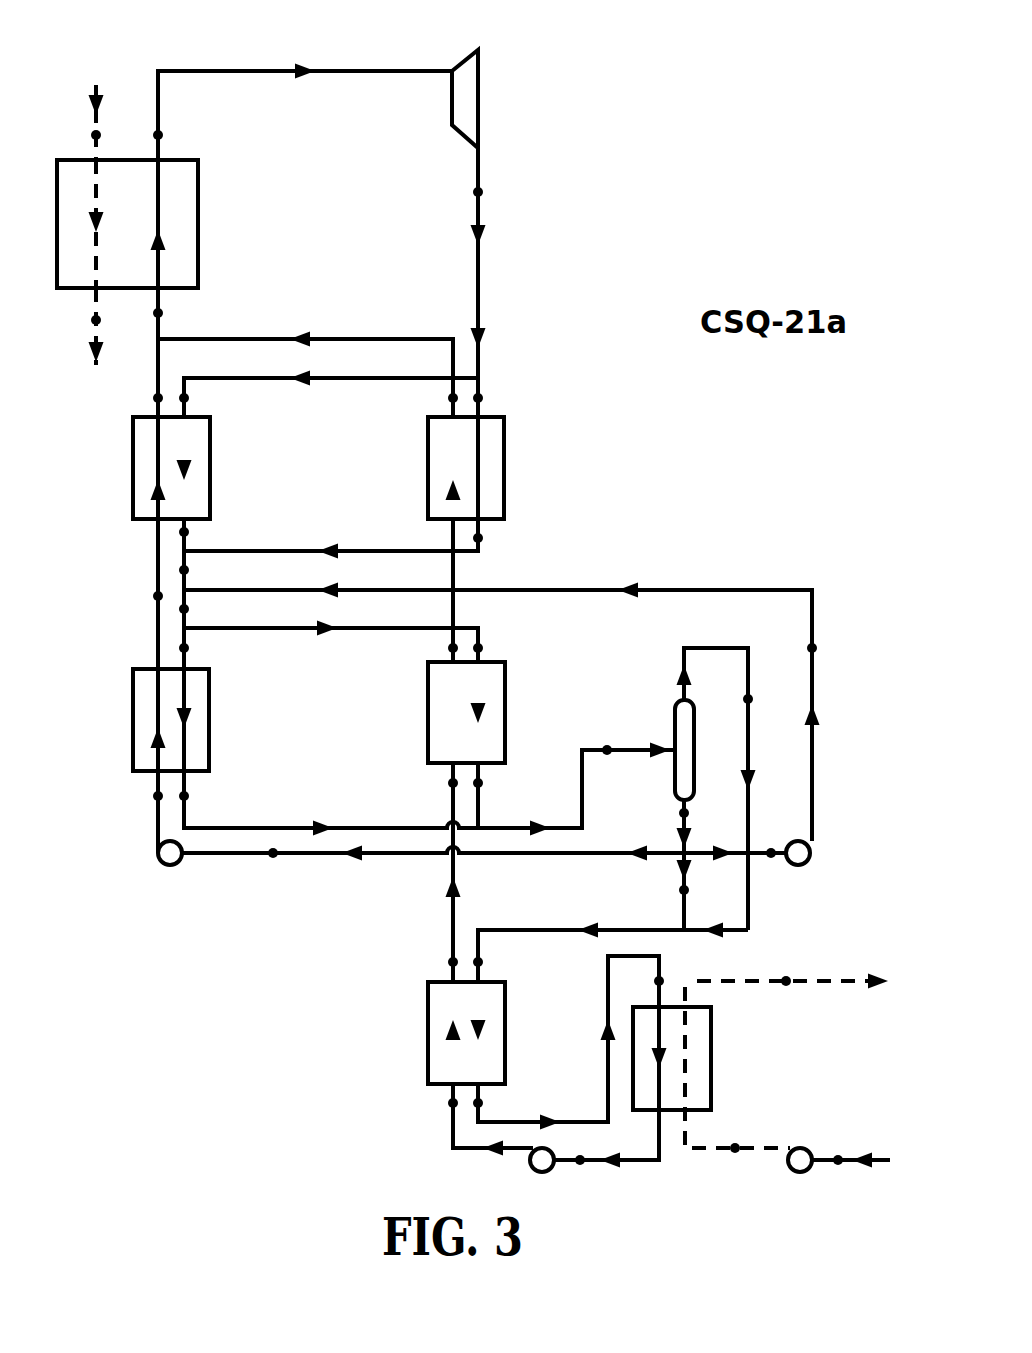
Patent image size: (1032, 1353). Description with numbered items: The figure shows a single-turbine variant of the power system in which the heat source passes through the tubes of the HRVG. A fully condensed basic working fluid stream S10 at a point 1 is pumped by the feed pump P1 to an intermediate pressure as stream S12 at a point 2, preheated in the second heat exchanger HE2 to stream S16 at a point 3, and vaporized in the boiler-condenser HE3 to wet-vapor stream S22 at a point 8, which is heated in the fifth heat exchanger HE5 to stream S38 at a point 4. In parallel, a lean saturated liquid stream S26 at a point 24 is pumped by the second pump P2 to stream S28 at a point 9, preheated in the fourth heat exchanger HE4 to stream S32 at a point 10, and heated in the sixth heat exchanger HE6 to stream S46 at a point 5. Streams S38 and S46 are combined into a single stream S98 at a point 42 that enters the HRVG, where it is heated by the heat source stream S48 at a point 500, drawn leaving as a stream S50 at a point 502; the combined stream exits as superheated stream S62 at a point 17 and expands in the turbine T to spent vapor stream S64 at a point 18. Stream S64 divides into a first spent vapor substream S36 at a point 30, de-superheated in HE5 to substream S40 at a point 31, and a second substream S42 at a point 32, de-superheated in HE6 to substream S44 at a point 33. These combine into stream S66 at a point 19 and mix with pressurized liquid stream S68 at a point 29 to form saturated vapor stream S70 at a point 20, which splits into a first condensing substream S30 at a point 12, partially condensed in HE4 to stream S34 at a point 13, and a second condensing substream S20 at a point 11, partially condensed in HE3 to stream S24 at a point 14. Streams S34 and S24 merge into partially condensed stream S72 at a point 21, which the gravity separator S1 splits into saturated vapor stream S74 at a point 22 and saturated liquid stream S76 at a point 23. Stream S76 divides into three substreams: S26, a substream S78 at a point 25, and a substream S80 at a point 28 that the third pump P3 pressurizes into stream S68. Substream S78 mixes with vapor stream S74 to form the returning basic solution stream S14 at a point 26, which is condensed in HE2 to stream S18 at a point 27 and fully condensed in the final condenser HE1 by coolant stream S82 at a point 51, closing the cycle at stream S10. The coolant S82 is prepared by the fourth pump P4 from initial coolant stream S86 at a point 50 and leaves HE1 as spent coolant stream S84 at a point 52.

The element HRVG is at (167, 224).
The turbine T is at (482, 99).
The first heat exchanger or final condenser HE1 is at (703, 1058).
The second heat exchanger or preheater HE2 is at (498, 1033).
The third heat exchanger or boiler-condenser HE3 is at (437, 712).
The fourth heat exchanger HE4 is at (200, 720).
The fifth heat exchanger HE5 is at (438, 468).
The sixth heat exchanger HE6 is at (199, 468).
The flash tank or gravity separator S1 is at (704, 750).
The first or feed pump P1 is at (542, 1178).
The second pump P2 is at (148, 856).
The third pump P3 is at (818, 856).
The fourth pump P4 is at (800, 1178).
The fully condensed basic working fluid stream S10 is at (645, 1165).
The intermediate pressure basic working fluid stream S12 is at (450, 1121).
The returning basic working fluid stream S14 is at (557, 927).
The heated basic working fluid stream S16 is at (440, 943).
The cooled returning basic working fluid stream S18 is at (582, 1118).
The second condensing lean combined working fluid substream S20 is at (428, 624).
The heated, vaporized basic working fluid stream S22 is at (455, 570).
The cooled second condensing combined working fluid substream S24 is at (482, 803).
The lean saturated liquid stream S26 is at (237, 860).
The high pressure lean liquid stream S28 is at (155, 814).
The first condensing lean combined working fluid substream S30 is at (187, 662).
The preheated high pressure lean liquid stream S32 is at (145, 643).
The cooled first condensing combined working fluid substream S34 is at (248, 825).
The first spent vapor substream S36 is at (482, 408).
The vaporized basic working fluid stream S38 is at (403, 338).
The first de-superheated vapor substream S40 is at (402, 548).
The second spent vapor substream S42 is at (403, 377).
The second de-superheated vapor substream S44 is at (175, 548).
The heated high pressure lean liquid stream S46 is at (147, 371).
The heat source stream S48 is at (93, 90).
The spent heat source stream S50 is at (93, 347).
The vaporized and superheated stream S62 is at (262, 73).
The spent vapor stream S64 is at (482, 290).
The combined de-superheated stream S66 is at (183, 588).
The pressurized liquid stream S68 is at (428, 587).
The saturated vapor stream S70 is at (183, 626).
The partially condensed working fluid stream S72 is at (633, 747).
The saturated vapor stream S74 is at (710, 645).
The saturated liquid stream S76 is at (682, 828).
The substream S78 is at (667, 910).
The substream S80 is at (697, 857).
The coolant stream S82 is at (750, 1145).
The spent coolant stream S84 is at (850, 977).
The initial coolant stream S86 is at (823, 1167).
The combined stream S98 is at (157, 300).
The point 1 is at (581, 1172).
The point 2 is at (441, 1105).
The point 3 is at (441, 874).
The point 4 is at (441, 400).
The point 5 is at (145, 400).
The point 8 is at (443, 650).
The point 9 is at (145, 798).
The point 10 is at (144, 598).
The point 11 is at (494, 650).
The point 12 is at (200, 650).
The point 13 is at (200, 798).
The point 14 is at (494, 785).
The point 17 is at (174, 137).
The point 18 is at (464, 194).
The point 19 is at (200, 572).
The point 20 is at (200, 611).
The point 21 is at (608, 762).
The point 22 is at (764, 701).
The point 23 is at (669, 815).
The point 24 is at (275, 866).
The point 25 is at (669, 892).
The point 26 is at (494, 964).
The point 27 is at (568, 1044).
The point 28 is at (772, 866).
The point 29 is at (829, 650).
The point 30 is at (494, 400).
The point 31 is at (494, 540).
The point 32 is at (200, 400).
The point 33 is at (200, 534).
The point 42 is at (146, 316).
The point 50 is at (838, 1149).
The point 51 is at (736, 1140).
The point 52 is at (785, 969).
The point 500 is at (78, 137).
The point 502 is at (78, 322).